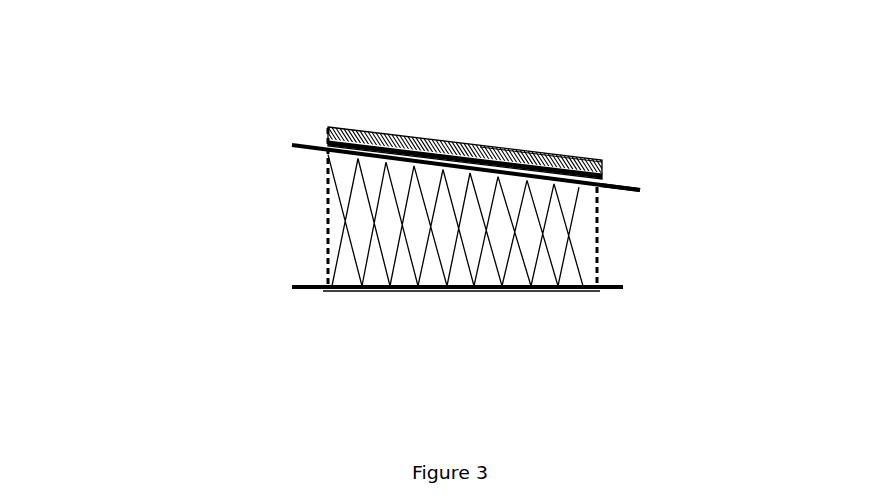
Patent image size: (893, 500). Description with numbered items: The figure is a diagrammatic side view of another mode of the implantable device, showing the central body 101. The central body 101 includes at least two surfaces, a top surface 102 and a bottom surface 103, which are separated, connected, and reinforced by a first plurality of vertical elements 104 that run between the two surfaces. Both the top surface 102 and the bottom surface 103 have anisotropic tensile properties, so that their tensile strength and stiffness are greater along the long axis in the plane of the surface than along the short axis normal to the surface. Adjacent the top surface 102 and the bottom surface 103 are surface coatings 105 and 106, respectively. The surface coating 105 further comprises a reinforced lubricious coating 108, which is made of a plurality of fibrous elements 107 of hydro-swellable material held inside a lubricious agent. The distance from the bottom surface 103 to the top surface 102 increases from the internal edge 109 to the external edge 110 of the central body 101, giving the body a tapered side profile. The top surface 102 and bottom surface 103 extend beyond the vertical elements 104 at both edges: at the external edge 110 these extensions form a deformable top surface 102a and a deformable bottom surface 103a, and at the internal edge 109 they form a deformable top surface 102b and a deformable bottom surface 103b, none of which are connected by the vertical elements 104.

The central body 101 is at (150, 97).
The top surface 102 is at (330, 133).
The deformable top surface 102a is at (307, 155).
The deformable top surface 102b is at (627, 180).
The bottom surface 103 is at (342, 290).
The deformable bottom surface 103a is at (292, 289).
The deformable bottom surface 103b is at (627, 282).
The first plurality of vertical elements 104 is at (347, 220).
The surface coating 105 is at (402, 138).
The surface coating 106 is at (443, 292).
The plurality of fibrous elements 107 is at (472, 145).
The reinforced lubricious coating 108 is at (543, 155).
The internal edge 109 is at (598, 233).
The external edge 110 is at (327, 192).